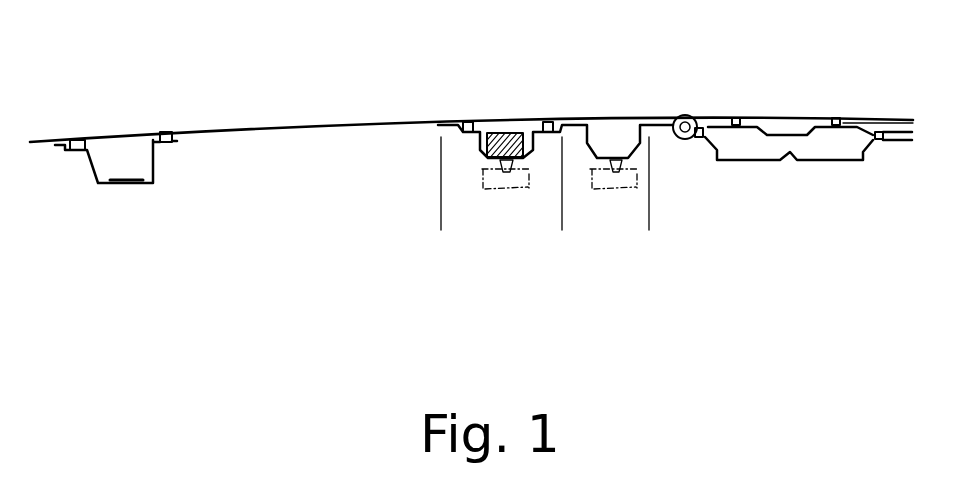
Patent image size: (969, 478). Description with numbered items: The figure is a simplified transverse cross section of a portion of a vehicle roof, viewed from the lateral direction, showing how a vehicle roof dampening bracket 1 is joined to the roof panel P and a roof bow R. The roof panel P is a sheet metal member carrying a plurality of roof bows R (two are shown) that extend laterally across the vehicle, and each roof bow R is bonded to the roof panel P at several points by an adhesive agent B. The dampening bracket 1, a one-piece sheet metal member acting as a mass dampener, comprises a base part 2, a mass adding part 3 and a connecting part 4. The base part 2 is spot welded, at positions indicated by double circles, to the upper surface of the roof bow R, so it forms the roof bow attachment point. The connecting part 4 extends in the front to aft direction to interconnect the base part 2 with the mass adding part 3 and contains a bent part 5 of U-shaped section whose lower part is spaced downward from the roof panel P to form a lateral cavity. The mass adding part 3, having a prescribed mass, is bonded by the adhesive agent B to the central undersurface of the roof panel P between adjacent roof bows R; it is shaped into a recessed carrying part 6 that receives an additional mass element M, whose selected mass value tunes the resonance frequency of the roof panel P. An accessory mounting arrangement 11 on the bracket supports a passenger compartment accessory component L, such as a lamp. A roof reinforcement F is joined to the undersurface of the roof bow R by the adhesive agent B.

The vehicle roof dampening bracket 1 is at (414, 138).
The base part 2 is at (663, 127).
The mass adding part 3 is at (560, 238).
The connecting part 4 is at (649, 238).
The bent part 5 is at (607, 118).
The carrying part 6 is at (513, 118).
The accessory mounting arrangement 11 is at (500, 163).
The adhesive agent B is at (466, 120).
The roof panel P is at (318, 124).
The additional mass element M is at (498, 133).
The roof bow R is at (127, 183).
The roof reinforcement F is at (752, 162).
The vehicle passenger compartment accessory component L is at (500, 195).